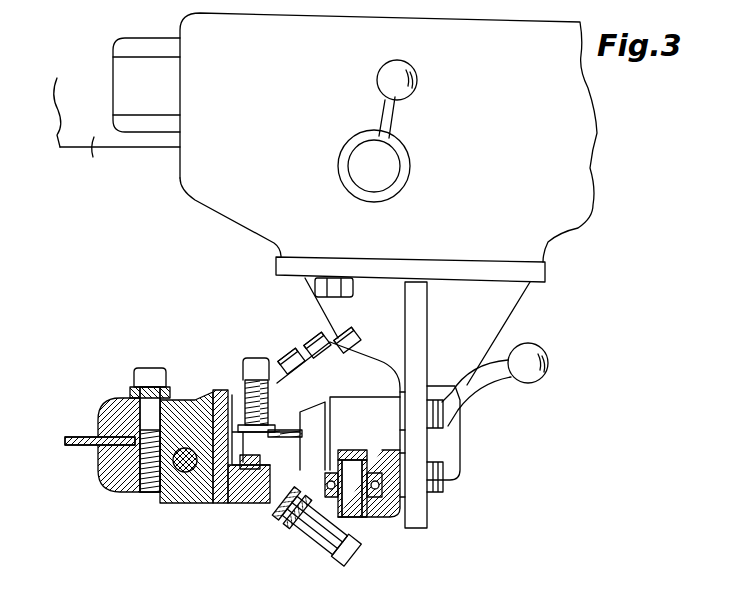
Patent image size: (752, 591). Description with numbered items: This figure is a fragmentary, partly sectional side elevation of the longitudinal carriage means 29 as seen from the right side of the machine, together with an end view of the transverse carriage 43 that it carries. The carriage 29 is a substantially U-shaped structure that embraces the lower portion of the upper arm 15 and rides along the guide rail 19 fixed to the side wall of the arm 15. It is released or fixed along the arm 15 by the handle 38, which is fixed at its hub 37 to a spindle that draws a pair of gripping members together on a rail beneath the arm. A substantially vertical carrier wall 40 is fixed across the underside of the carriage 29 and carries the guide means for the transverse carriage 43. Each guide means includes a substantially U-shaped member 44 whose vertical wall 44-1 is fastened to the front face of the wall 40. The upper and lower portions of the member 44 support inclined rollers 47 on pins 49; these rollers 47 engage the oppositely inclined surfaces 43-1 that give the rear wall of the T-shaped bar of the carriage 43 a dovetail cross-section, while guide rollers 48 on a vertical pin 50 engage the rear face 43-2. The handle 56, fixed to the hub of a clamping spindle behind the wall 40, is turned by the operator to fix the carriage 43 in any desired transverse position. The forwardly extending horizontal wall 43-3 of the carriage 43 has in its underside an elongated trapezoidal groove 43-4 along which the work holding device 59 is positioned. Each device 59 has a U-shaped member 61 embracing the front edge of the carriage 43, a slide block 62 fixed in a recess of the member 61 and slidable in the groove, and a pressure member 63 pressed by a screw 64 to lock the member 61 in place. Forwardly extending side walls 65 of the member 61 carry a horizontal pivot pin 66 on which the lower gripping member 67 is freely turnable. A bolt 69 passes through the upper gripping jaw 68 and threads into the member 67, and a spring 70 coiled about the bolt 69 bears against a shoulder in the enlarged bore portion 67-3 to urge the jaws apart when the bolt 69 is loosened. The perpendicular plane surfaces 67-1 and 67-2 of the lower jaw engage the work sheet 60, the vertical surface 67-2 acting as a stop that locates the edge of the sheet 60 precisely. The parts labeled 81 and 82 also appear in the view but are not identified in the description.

The upper arm 15 is at (117, 132).
The guide rail 19 is at (122, 80).
The longitudinal carriage means 29 is at (240, 197).
The hub 37 is at (400, 180).
The handle 38 is at (392, 118).
The carrier wall 40 is at (418, 334).
The transverse carriage 43 is at (320, 470).
The inclined surfaces 43-1 is at (318, 428).
The rear face 43-2 is at (343, 462).
The horizontal wall 43-3 is at (232, 398).
The elongated groove 43-4 is at (271, 440).
The U-shaped member 44 is at (385, 522).
The vertical wall 44-1 is at (392, 462).
The rollers 47 is at (290, 356).
The guide rollers 48 is at (331, 397).
The pins 49 is at (326, 542).
The vertical pin 50 is at (350, 470).
The handle 56 is at (490, 380).
The work holding device 59 is at (216, 506).
The work sheet 60 is at (77, 434).
The U-shaped member 61 is at (229, 504).
The slide block 62 is at (250, 505).
The pressure member 63 is at (244, 430).
The screw 64 is at (250, 378).
The side walls 65 is at (208, 492).
The pivot pin 66 is at (165, 503).
The lower gripping member 67 is at (128, 502).
The plane surface 67-1 is at (110, 458).
The vertical surface 67-2 is at (123, 396).
The enlarged bore portion 67-3 is at (135, 488).
The upper gripping jaw 68 is at (108, 405).
The bolt 69 is at (150, 392).
The spring 70 is at (180, 398).
The plate 81 is at (284, 438).
The bracket 82 is at (283, 432).